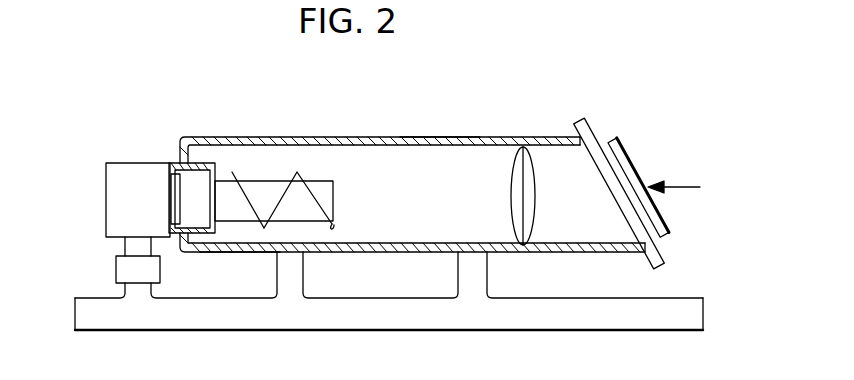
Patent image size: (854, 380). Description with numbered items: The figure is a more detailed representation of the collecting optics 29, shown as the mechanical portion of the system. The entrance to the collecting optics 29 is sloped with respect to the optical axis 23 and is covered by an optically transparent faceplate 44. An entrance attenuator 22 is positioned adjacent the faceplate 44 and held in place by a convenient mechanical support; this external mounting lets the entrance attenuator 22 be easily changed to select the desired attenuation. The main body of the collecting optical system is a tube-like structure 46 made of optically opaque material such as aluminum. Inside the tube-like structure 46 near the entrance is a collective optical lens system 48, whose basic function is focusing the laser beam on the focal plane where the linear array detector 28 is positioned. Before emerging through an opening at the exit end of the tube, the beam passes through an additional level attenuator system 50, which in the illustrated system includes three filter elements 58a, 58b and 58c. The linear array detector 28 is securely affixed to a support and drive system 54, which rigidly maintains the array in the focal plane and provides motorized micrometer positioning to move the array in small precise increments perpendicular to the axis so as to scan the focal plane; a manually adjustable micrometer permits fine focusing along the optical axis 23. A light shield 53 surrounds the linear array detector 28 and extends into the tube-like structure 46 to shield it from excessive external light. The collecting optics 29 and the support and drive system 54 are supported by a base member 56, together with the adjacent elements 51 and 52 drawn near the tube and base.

The entrance attenuator 22 is at (661, 238).
The optical axis 23 is at (677, 186).
The linear array detector 28 is at (175, 196).
The collecting optics 29 is at (301, 124).
The optically transparent faceplate 44 is at (588, 129).
The tube-like structure 46 is at (421, 137).
The collective optical lens system 48 is at (517, 146).
The level attenuator system 50 is at (334, 192).
The connector block 51 is at (115, 270).
The tube bottom wall 52 is at (228, 255).
The light shield 53 is at (204, 168).
The support and drive system 54 is at (118, 168).
The base member 56 is at (231, 318).
The filter element 58a is at (241, 181).
The filter element 58b is at (285, 180).
The filter element 58c is at (333, 226).